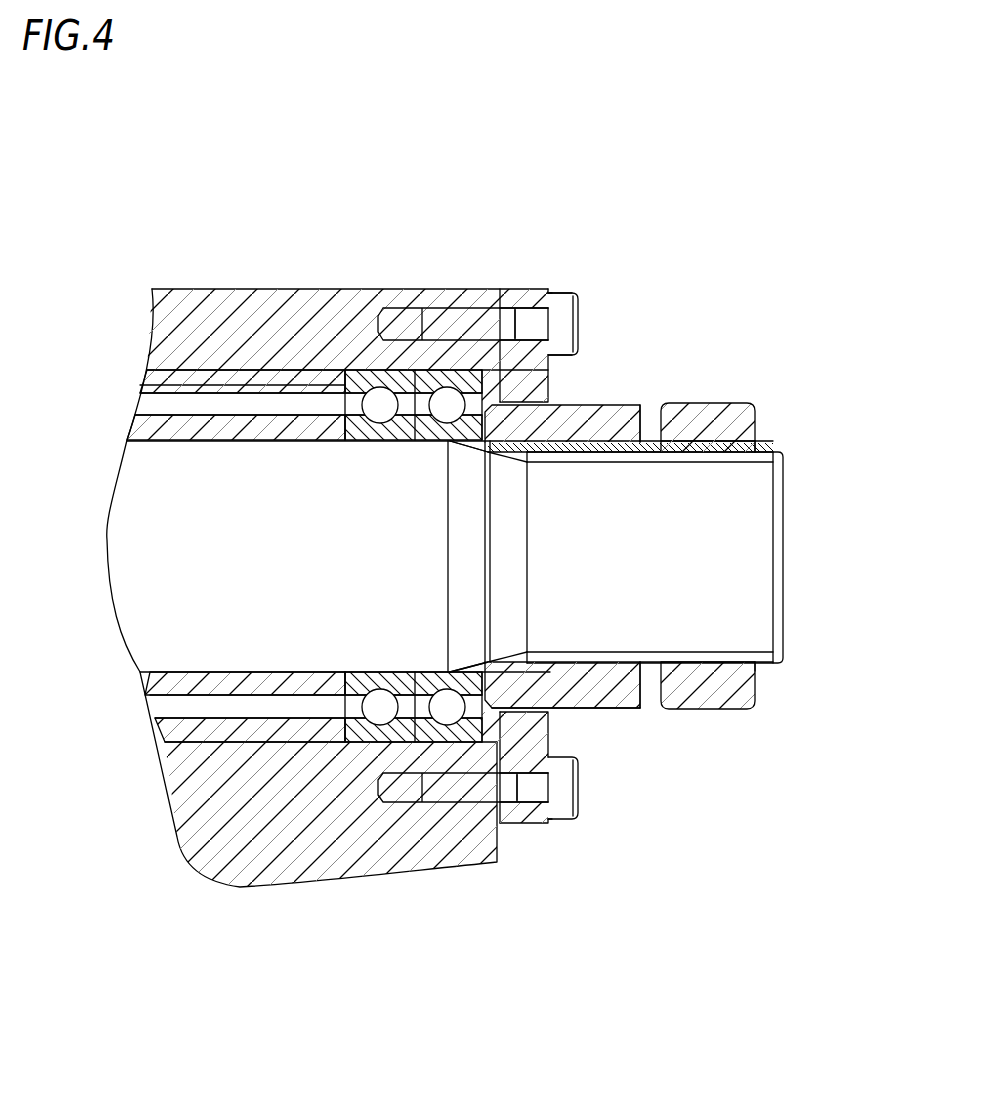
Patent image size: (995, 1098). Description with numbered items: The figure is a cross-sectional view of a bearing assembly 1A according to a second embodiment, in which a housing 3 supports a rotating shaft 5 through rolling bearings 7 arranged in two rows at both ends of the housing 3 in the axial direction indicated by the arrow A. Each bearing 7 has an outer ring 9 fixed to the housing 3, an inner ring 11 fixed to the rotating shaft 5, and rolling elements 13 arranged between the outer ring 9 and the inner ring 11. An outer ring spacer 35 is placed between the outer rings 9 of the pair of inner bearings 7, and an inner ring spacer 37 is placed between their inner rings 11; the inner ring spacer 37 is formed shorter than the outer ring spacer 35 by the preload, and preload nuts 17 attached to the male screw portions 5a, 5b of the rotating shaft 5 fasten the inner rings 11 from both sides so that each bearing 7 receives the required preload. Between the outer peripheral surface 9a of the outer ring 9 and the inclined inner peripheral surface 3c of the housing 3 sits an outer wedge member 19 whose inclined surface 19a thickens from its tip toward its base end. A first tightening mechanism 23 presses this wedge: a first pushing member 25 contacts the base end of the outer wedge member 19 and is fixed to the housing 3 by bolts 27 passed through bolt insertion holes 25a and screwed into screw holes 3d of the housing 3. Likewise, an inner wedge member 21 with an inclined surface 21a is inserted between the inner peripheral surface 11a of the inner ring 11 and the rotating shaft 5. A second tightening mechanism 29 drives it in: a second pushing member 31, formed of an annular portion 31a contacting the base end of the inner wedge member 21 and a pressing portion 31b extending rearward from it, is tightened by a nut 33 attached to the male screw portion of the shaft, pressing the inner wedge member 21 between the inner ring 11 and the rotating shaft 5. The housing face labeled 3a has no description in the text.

The bearing assembly 1A is at (197, 180).
The arrow indicating axial direction A is at (497, 130).
The housing 3 is at (197, 812).
The housing flange face 3a is at (140, 385).
The inclined inner peripheral surface 3c is at (553, 757).
The screw hole 3d is at (494, 308).
The rotating shaft 5 is at (787, 570).
The male screw portion 5a is at (428, 441).
The male screw portion 5b is at (718, 435).
The rolling bearing 7 is at (345, 213).
The outer ring 9 is at (345, 385).
The outer peripheral surface 9a is at (446, 388).
The inner ring 11 is at (330, 427).
The inner peripheral surface 11a is at (450, 442).
The rolling elements 13 is at (340, 405).
The preload nut 17 is at (607, 710).
The outer wedge member 19 is at (502, 381).
The inclined surface 19a is at (467, 325).
The inner wedge member 21 is at (503, 453).
The inclined surface 21a is at (492, 462).
The first tightening mechanism 23 is at (588, 281).
The first pushing member 25 is at (518, 310).
The bolt insertion hole 25a is at (553, 298).
The bolt 27 is at (580, 306).
The second tightening mechanism 29 is at (768, 394).
The second pushing member 31 is at (658, 413).
The annular portion 31a is at (585, 710).
The pressing portion 31b is at (650, 430).
The nut 33 is at (697, 417).
The outer ring spacer 35 is at (207, 367).
The inner ring spacer 37 is at (190, 442).